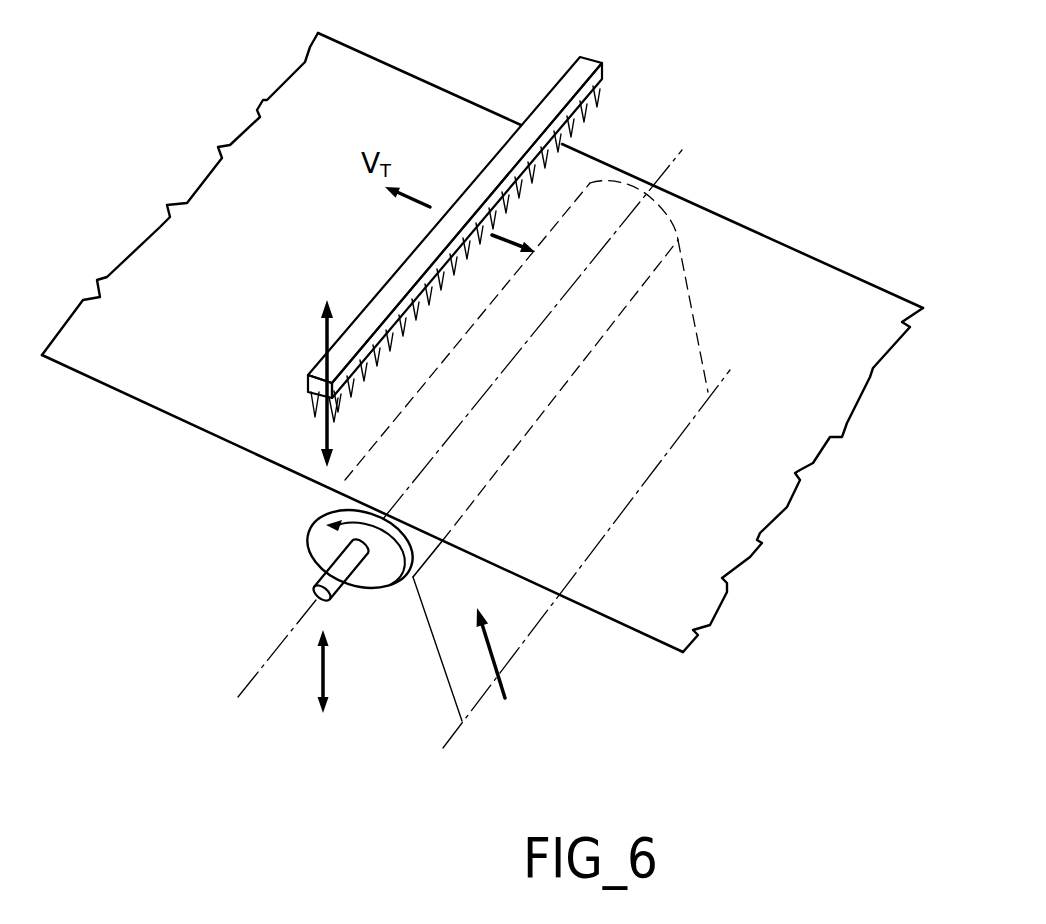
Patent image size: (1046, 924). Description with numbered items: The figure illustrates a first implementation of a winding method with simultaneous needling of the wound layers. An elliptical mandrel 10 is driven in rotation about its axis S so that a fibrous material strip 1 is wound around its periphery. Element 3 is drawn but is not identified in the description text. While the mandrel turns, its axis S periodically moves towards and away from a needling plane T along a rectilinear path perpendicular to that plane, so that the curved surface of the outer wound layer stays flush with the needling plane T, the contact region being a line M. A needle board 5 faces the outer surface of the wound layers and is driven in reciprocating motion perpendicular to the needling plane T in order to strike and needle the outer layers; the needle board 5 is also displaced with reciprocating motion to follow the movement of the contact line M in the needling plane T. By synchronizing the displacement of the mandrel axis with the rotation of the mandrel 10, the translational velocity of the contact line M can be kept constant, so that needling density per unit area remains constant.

The fibrous material strip 1 is at (463, 708).
The roller 3 is at (313, 543).
The needle board 5 is at (571, 80).
The elliptical mandrel 10 is at (308, 585).
The needling plane T is at (767, 503).
The axis S is at (450, 423).
The contact line M is at (507, 365).